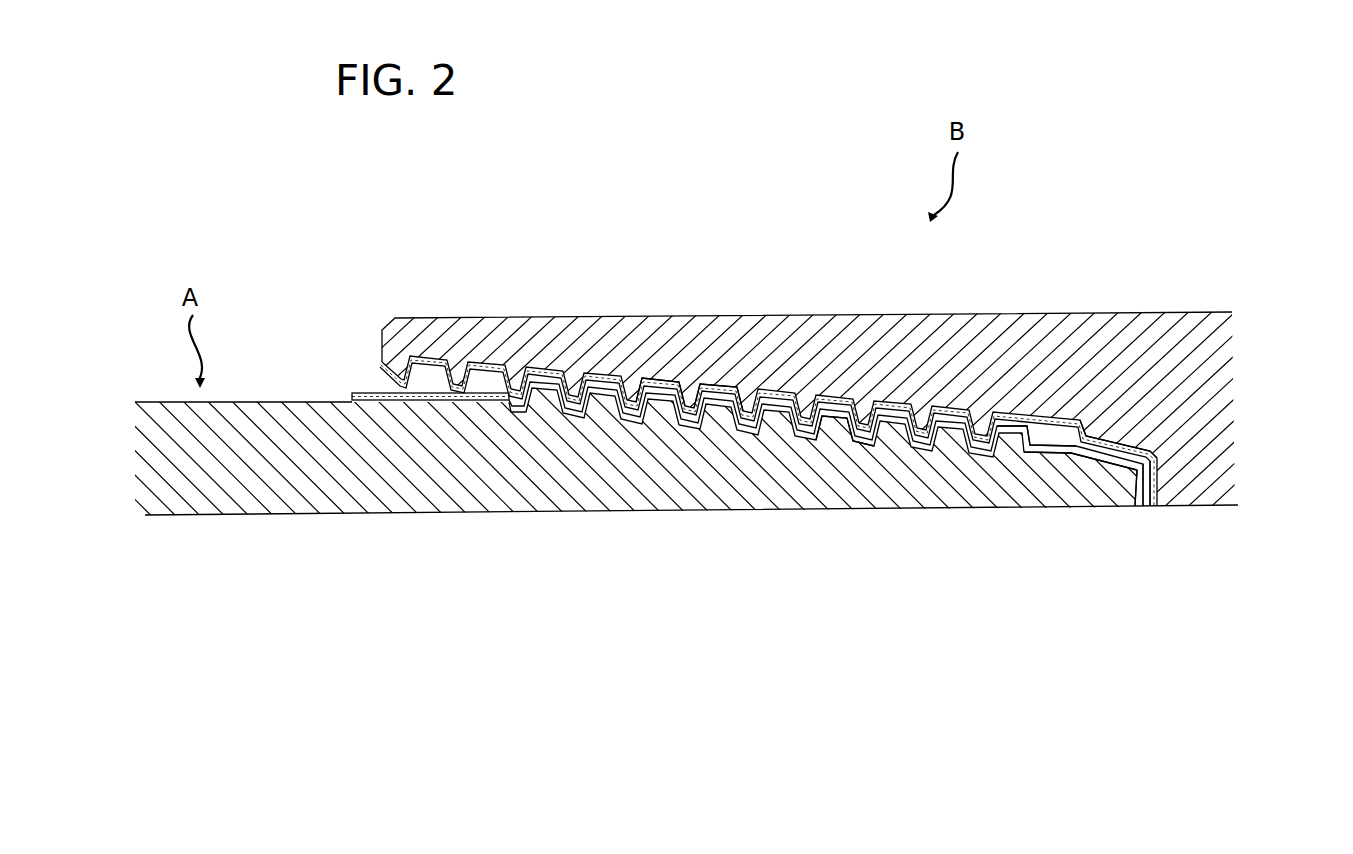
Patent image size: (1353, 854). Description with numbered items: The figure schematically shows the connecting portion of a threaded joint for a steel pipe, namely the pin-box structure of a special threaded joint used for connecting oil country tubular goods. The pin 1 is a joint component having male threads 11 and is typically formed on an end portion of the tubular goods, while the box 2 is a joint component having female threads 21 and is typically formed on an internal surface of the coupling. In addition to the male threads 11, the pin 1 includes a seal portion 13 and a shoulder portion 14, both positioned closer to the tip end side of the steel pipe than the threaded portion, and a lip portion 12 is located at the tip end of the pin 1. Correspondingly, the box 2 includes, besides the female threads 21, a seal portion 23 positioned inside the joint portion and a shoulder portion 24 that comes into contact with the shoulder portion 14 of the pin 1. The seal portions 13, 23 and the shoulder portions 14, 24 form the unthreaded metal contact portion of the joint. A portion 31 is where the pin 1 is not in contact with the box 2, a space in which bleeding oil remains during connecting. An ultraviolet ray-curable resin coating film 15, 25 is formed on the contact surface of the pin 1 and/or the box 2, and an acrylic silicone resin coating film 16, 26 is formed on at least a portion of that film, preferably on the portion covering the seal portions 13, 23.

The pin 1 is at (538, 452).
The box 2 is at (1013, 360).
The male threads 11 is at (847, 442).
The lip portion 12 is at (1090, 472).
The seal portion 13 is at (1137, 483).
The shoulder portion 14 is at (1150, 480).
The ultraviolet ray-curable resin coating film 15 is at (633, 428).
The acrylic silicone resin coating film 16 is at (703, 434).
The female threads 21 is at (872, 410).
The seal portion 23 is at (1122, 468).
The shoulder portion 24 is at (1158, 478).
The ultraviolet ray-curable resin coating film 25 is at (655, 383).
The acrylic silicone resin coating film 26 is at (727, 393).
The non-contact portion 31 is at (1057, 430).